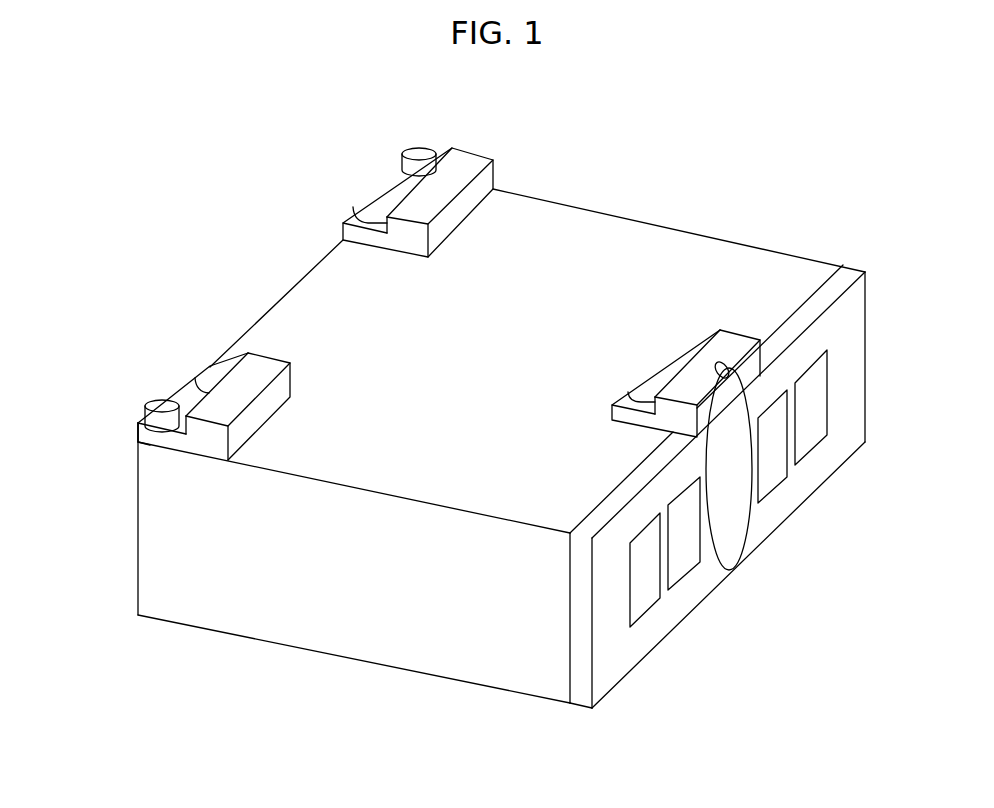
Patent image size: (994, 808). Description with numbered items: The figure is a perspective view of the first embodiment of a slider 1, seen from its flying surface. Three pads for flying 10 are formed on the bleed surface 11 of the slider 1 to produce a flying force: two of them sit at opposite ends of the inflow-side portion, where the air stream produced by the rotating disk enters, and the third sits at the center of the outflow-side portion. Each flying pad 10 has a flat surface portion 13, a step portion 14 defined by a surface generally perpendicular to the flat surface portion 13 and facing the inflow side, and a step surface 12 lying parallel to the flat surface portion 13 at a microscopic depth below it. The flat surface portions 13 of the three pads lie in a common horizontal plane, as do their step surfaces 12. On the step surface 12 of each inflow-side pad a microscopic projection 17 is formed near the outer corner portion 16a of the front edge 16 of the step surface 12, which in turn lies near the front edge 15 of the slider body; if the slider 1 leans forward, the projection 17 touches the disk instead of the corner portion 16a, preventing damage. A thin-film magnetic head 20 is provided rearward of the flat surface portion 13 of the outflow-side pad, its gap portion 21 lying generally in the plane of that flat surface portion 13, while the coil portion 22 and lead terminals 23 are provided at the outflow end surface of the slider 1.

The slider 1 is at (320, 697).
The pad for flying 10 is at (507, 141).
The bleed surface 11 is at (695, 247).
The step surface 12 is at (390, 187).
The flat surface portion 13 is at (463, 150).
The step portion 14 is at (355, 208).
The front edge of the body of the slider 15 is at (293, 286).
The front edge of the step surface 16 is at (380, 187).
The outer corner portion 16a is at (137, 425).
The microscopic projection 17 is at (420, 150).
The thin-film magnetic head 20 is at (766, 579).
The gap portion 21 is at (722, 362).
The coil portion 22 is at (740, 502).
The lead terminals 23 is at (643, 592).